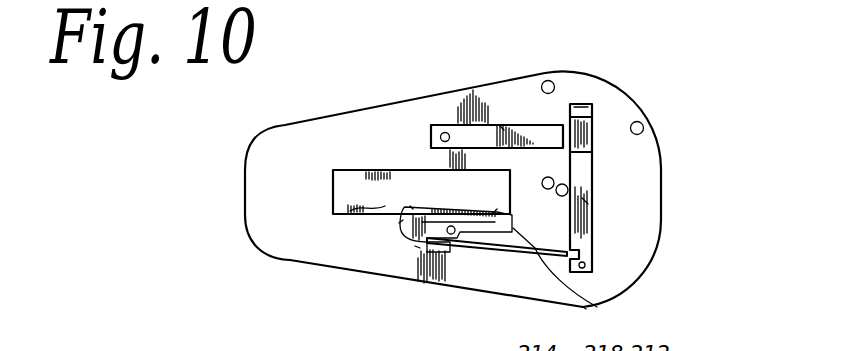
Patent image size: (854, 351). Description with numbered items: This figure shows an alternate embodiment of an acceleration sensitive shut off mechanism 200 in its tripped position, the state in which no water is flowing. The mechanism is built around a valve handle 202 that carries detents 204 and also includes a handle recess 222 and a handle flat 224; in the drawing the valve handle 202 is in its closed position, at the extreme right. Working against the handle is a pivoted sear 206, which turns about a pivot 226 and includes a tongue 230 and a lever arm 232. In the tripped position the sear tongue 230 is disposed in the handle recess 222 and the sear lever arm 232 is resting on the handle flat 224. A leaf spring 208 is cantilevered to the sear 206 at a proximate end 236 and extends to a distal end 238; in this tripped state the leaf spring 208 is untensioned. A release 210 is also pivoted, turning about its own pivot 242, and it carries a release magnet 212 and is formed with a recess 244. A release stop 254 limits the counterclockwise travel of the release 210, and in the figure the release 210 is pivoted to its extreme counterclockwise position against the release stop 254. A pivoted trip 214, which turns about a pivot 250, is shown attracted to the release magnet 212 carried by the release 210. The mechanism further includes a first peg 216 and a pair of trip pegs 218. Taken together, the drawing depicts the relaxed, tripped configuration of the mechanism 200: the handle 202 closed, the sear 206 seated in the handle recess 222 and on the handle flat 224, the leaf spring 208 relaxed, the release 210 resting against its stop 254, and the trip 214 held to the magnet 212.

The acceleration sensitive shut off mechanism 200 is at (698, 80).
The valve handle 202 is at (421, 192).
The detents 204 is at (462, 212).
The pivoted sear 206 is at (410, 234).
The leaf spring 208 is at (500, 243).
The release 210 is at (587, 202).
The release magnet 212 is at (593, 117).
The pivoted trip 214 is at (502, 126).
The first peg 216 is at (590, 126).
The trip pegs 218 is at (553, 82).
The handle recess 222 is at (410, 206).
The handle flat 224 is at (495, 213).
The pivot 226 is at (456, 252).
The tongue 230 is at (403, 220).
The lever arm 232 is at (597, 307).
The proximate end 236 is at (415, 246).
The distal end 238 is at (583, 307).
The pivot 242 is at (585, 263).
The recess 244 is at (578, 250).
The pivot 250 is at (443, 136).
The release stop 254 is at (568, 189).